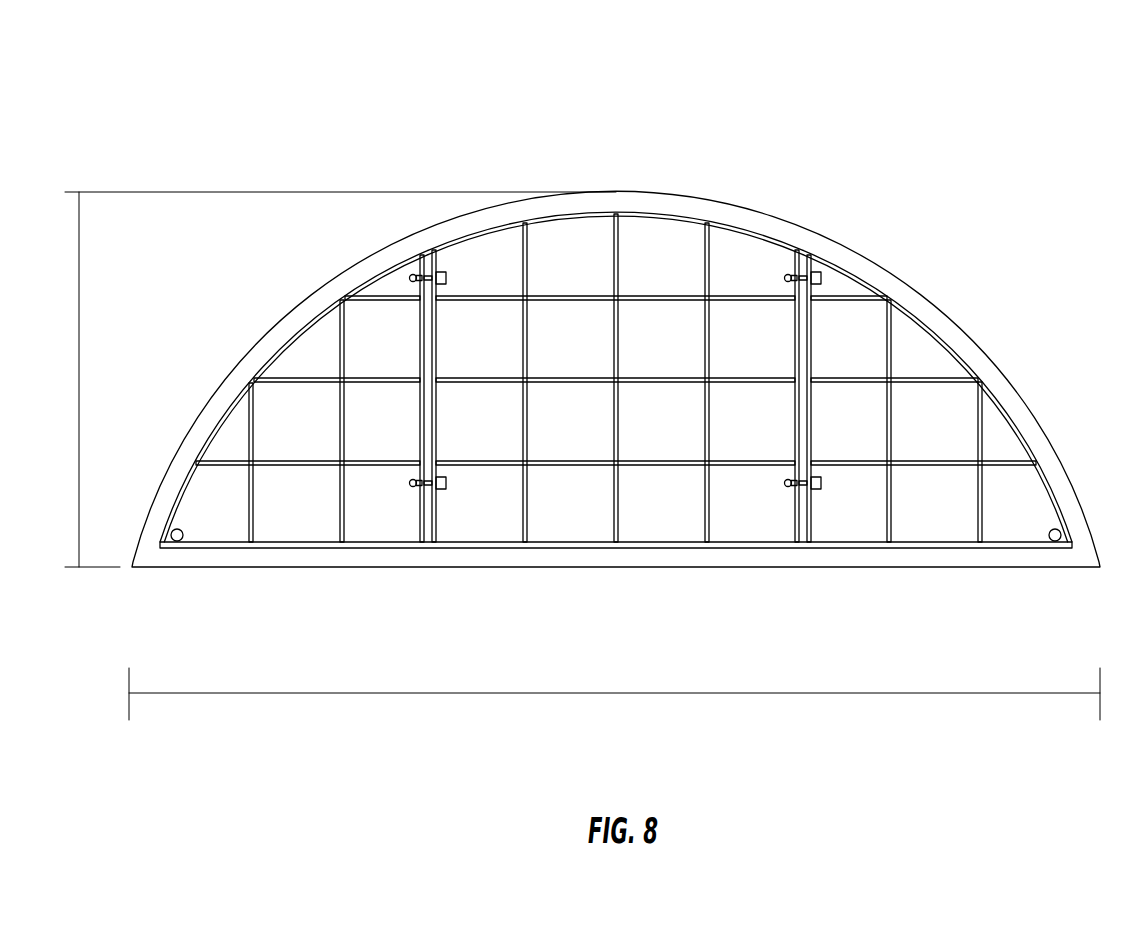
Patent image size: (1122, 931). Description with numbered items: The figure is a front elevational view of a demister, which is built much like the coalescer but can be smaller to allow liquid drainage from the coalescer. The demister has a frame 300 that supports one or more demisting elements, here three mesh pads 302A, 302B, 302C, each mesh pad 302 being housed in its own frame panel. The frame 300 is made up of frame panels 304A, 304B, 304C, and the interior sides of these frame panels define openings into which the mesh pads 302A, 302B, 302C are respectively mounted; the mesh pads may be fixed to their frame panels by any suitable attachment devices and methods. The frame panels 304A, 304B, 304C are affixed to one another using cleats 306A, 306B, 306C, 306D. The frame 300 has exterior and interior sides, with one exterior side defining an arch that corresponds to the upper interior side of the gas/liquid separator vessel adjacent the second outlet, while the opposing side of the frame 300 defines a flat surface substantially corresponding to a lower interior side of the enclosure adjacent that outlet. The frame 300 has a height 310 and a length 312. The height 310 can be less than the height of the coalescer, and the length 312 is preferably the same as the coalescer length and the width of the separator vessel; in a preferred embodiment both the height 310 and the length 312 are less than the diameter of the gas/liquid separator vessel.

The frame 300 is at (627, 186).
The mesh pad 302 is at (604, 370).
The mesh pad 302A is at (254, 568).
The mesh pad 302B is at (524, 570).
The mesh pad 302C is at (978, 569).
The frame panel 304A is at (291, 325).
The frame panel 304B is at (525, 219).
The frame panel 304C is at (946, 337).
The cleat 306A is at (428, 247).
The cleat 306B is at (444, 500).
The cleat 306C is at (825, 283).
The cleat 306D is at (822, 503).
The height 310 is at (327, 379).
The length 312 is at (614, 701).